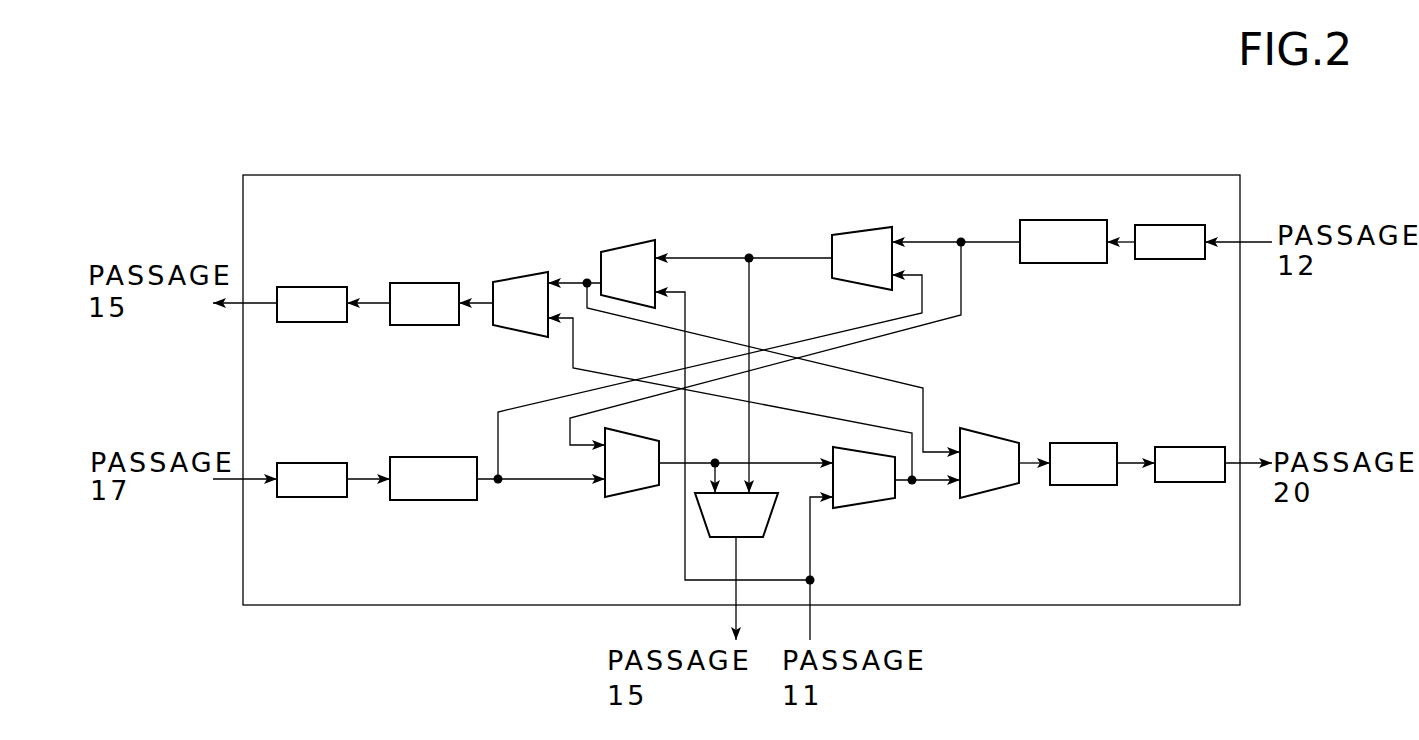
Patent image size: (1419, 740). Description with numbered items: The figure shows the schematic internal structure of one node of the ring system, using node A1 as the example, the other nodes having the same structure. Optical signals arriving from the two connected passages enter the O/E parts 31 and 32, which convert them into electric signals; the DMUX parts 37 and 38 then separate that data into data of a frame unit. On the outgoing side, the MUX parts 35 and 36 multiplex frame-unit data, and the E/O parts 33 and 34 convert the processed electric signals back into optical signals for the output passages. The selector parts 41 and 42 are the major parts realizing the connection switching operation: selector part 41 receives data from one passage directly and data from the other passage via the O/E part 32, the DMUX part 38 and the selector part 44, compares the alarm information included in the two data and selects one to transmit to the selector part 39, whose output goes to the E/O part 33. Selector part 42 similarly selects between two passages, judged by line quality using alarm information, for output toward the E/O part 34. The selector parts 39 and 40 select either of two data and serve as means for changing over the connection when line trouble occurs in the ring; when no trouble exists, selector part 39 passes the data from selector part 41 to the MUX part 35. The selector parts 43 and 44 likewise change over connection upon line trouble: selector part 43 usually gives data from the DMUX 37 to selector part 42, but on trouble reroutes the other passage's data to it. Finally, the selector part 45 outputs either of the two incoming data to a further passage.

The O/E part 31 is at (302, 463).
The O/E part 32 is at (1162, 225).
The E/O part 33 is at (310, 287).
The E/O part 34 is at (1186, 447).
The MUX part 35 is at (422, 283).
The MUX part 36 is at (1083, 443).
The DMUX part 37 is at (415, 457).
The DMUX part 38 is at (1063, 220).
The selector part 39 is at (510, 279).
The selector part 40 is at (990, 436).
The selector part 41 is at (620, 248).
The selector part 42 is at (885, 500).
The selector part 43 is at (626, 492).
The selector part 44 is at (862, 231).
The selector part 45 is at (768, 525).